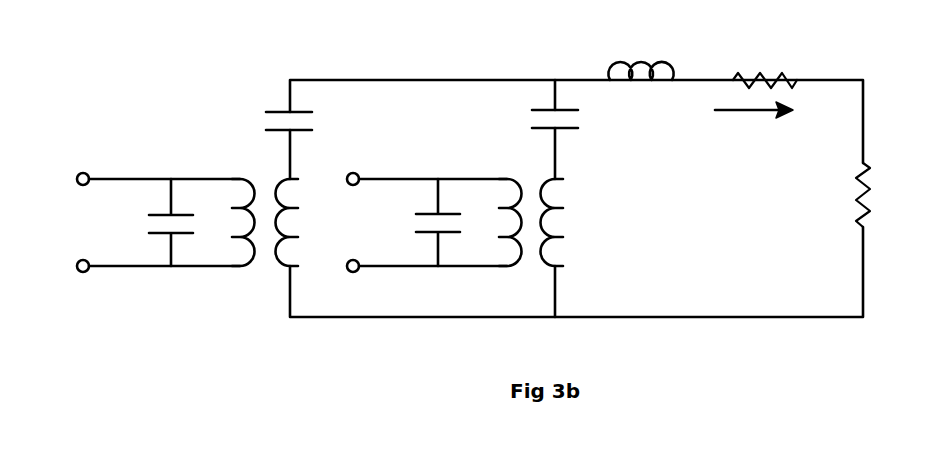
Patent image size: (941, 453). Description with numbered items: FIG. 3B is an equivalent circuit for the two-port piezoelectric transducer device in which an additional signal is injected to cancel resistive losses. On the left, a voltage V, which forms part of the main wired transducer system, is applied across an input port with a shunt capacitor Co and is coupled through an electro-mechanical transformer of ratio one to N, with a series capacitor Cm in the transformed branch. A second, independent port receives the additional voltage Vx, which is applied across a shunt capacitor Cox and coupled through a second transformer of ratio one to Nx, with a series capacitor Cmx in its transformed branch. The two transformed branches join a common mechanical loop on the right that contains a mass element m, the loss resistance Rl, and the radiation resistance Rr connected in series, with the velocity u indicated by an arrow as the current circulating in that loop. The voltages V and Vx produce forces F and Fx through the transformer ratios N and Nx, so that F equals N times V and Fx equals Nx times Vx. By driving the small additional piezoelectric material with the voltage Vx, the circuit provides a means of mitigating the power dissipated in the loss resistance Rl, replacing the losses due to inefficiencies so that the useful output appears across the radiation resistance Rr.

The voltage V is at (148, 222).
The input shunt capacitor Co is at (152, 222).
The series coupling capacitor Cm is at (269, 116).
The additional voltage Vx is at (411, 222).
The auxiliary shunt capacitor Cox is at (411, 222).
The auxiliary series coupling capacitor Cmx is at (527, 125).
The mass inductance m is at (640, 54).
The loss resistance Rl is at (765, 58).
The velocity u is at (754, 125).
The radiation resistance Rr is at (878, 195).